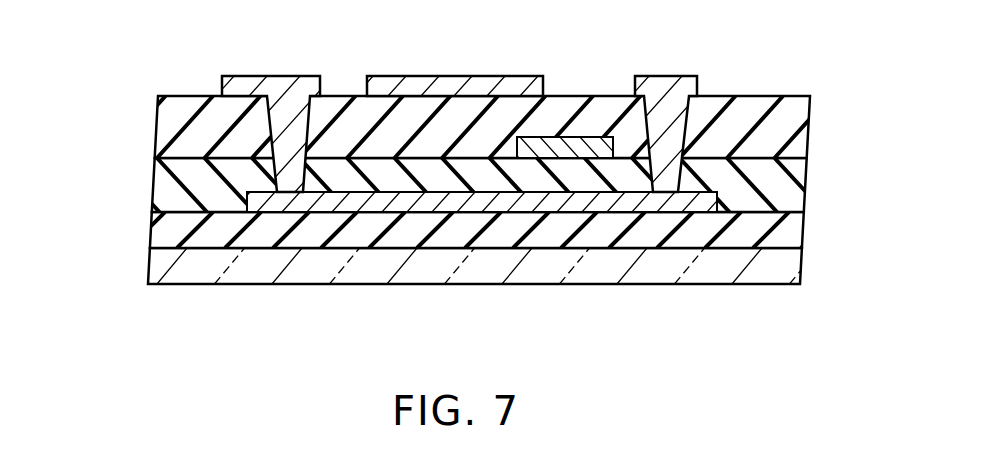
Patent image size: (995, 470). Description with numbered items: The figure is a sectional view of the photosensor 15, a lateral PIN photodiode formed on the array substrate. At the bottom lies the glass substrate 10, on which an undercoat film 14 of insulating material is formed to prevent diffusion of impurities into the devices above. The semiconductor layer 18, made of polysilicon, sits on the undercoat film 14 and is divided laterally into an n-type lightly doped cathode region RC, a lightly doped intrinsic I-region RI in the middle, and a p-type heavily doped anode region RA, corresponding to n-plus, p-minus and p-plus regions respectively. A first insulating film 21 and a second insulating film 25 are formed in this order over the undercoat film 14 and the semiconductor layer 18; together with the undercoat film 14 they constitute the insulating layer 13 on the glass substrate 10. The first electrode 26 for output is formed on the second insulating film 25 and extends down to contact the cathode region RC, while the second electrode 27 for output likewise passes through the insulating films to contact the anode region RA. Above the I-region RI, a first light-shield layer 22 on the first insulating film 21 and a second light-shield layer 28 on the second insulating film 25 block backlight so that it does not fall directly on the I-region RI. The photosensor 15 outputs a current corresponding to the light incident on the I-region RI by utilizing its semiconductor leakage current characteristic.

The glass substrate 10 is at (790, 275).
The insulating layer 13 is at (75, 122).
The undercoat film 14 is at (152, 231).
The photosensor 15 is at (792, 61).
The semiconductor layer 18 is at (720, 204).
The first insulating film 21 is at (155, 181).
The first light-shield layer 22 is at (571, 137).
The second insulating film 25 is at (153, 130).
The first electrode 26 is at (287, 76).
The second electrode 27 is at (665, 76).
The second light-shield layer 28 is at (470, 76).
The cathode region RC is at (350, 214).
The I-region RI is at (560, 214).
The anode region RA is at (693, 214).